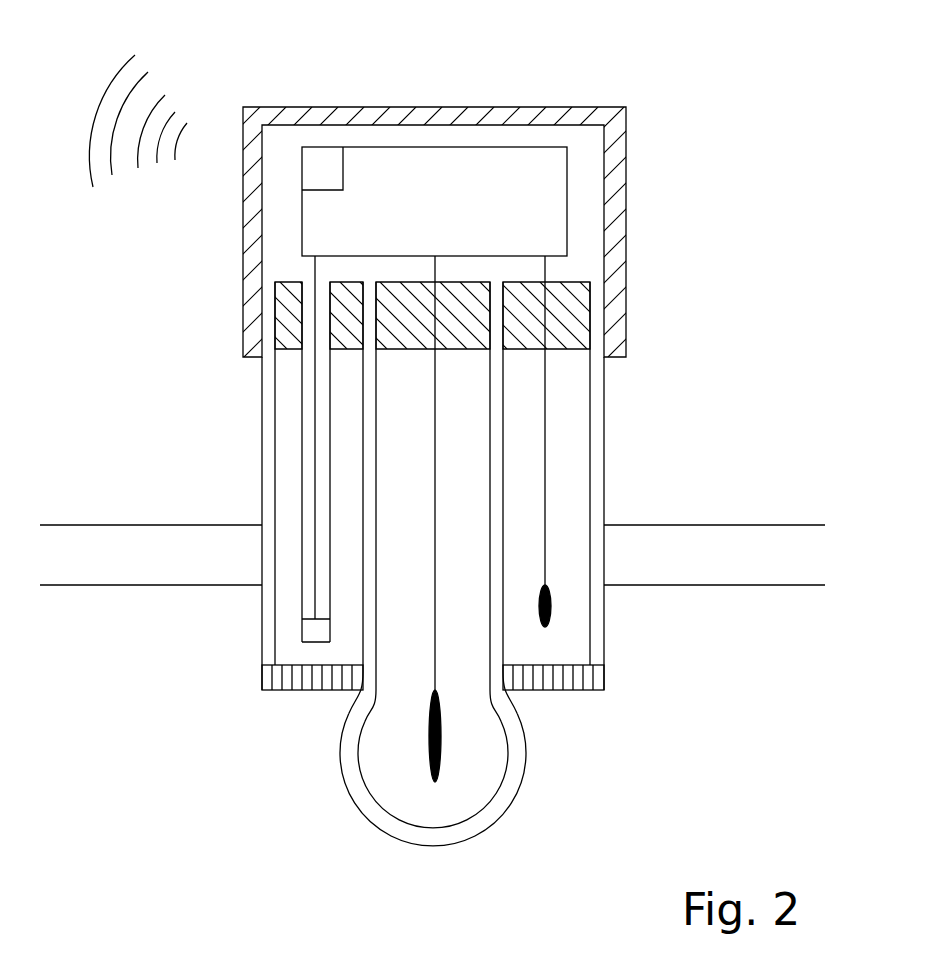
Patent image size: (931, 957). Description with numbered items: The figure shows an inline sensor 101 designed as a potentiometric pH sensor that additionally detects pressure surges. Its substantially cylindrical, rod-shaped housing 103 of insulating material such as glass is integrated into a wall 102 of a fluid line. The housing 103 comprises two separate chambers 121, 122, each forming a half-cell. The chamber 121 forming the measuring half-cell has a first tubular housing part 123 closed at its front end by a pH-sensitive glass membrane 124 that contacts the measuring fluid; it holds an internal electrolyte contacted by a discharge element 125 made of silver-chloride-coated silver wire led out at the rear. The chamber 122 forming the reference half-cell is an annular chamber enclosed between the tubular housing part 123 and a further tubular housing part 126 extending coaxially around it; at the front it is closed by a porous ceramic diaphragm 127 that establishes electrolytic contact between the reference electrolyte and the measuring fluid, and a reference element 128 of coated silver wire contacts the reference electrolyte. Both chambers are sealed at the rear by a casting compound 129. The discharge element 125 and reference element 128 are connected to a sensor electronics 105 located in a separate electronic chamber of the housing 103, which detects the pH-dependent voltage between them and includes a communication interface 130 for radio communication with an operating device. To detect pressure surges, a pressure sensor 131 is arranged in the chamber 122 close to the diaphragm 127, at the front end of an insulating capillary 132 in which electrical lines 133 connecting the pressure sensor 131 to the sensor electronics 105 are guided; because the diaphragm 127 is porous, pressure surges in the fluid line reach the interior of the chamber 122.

The inline sensor 101 is at (429, 219).
The wall of a fluid line 102 is at (785, 547).
The housing 103 is at (597, 445).
The sensor electronics 105 is at (412, 212).
The chamber forming the measuring half-cell 121 is at (480, 738).
The chamber forming the reference half-cell 122 is at (560, 640).
The first tubular housing part 123 is at (365, 638).
The pH-sensitive glass membrane 124 is at (482, 822).
The discharge element 125 is at (427, 743).
The tubular housing part 126 is at (262, 383).
The porous ceramic diaphragm 127 is at (578, 680).
The reference element 128 is at (545, 507).
The casting compound 129 is at (592, 307).
The communication interface 130 is at (320, 160).
The pressure sensor 131 is at (310, 632).
The capillary 132 is at (302, 445).
The electrical lines 133 is at (315, 472).